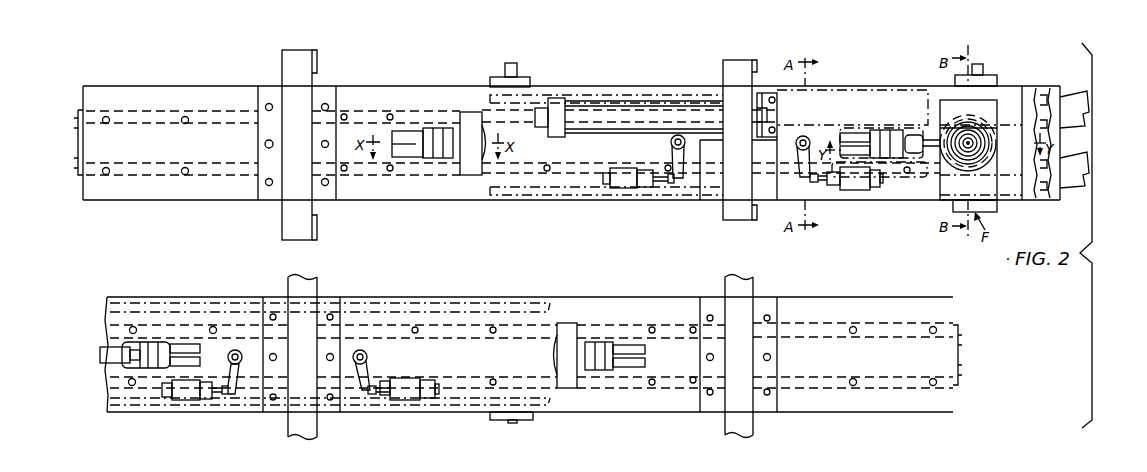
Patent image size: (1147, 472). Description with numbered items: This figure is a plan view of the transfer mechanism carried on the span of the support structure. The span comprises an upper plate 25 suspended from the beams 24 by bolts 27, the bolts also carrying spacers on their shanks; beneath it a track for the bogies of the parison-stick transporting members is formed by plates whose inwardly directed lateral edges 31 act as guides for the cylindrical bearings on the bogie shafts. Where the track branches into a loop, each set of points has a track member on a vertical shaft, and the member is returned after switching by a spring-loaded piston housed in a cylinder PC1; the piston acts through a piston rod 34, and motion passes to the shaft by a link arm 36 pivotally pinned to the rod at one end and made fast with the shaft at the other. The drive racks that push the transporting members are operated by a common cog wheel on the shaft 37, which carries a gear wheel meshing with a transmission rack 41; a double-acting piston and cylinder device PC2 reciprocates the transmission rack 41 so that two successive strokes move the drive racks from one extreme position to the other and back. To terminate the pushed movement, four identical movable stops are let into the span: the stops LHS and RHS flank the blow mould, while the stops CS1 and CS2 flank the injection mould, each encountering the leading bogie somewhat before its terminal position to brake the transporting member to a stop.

The beams 24 is at (292, 205).
The upper plate 25 is at (362, 192).
The bolts 27 is at (264, 144).
The inwardly directed lateral edges 31 is at (137, 364).
The piston rod 34 is at (660, 189).
The link arm 36 is at (676, 155).
The shaft 37 is at (969, 144).
The transmission rack 41 is at (863, 115).
The left-hand stop LHS is at (442, 161).
The right-hand stop RHS is at (600, 339).
The cylinder PC1 is at (616, 188).
The piston and cylinder device PC2 is at (647, 105).
The central stop CS1 is at (898, 127).
The central stop CS2 is at (150, 336).